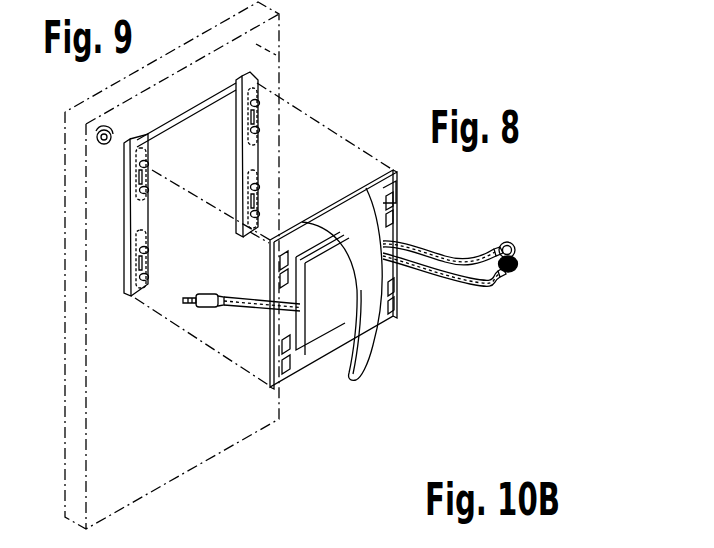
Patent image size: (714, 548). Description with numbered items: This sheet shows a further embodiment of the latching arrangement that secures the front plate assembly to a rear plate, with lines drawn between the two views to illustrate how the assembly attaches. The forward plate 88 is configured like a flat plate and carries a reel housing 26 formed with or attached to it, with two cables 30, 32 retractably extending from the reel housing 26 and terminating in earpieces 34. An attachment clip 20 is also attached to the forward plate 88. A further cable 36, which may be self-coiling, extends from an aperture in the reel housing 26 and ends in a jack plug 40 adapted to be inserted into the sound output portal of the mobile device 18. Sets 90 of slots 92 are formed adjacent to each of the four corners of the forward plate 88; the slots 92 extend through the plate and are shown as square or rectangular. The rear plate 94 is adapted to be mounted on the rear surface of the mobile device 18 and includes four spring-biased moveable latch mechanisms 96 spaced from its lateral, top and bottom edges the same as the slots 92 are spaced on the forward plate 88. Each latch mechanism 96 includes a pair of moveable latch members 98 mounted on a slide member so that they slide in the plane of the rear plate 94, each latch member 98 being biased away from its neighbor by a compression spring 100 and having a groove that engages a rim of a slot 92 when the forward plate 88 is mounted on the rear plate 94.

In FIG. 9, the mobile device 18 is at (283, 44).
In FIG. 9, the rear plate 94 is at (137, 218).
In FIG. 9, the spring-biased moveable latch mechanism 96 is at (258, 108).
In FIG. 9, the moveable latch member 98 is at (143, 250).
In FIG. 9, the compression spring 100 is at (127, 263).
In FIG. 8, the forward plate 88 is at (395, 178).
In FIG. 8, the set of slots 90 is at (278, 270).
In FIG. 8, the slot 92 is at (397, 213).
In FIG. 8, the reel housing 26 is at (330, 348).
In FIG. 8, the attachment clip 20 is at (367, 350).
In FIG. 8, the jack plug 40 is at (205, 295).
In FIG. 8, the cable 36 is at (242, 303).
In FIG. 8, the cable 30 is at (440, 249).
In FIG. 8, the cable 32 is at (455, 275).
In FIG. 8, the earpiece 34 is at (512, 245).